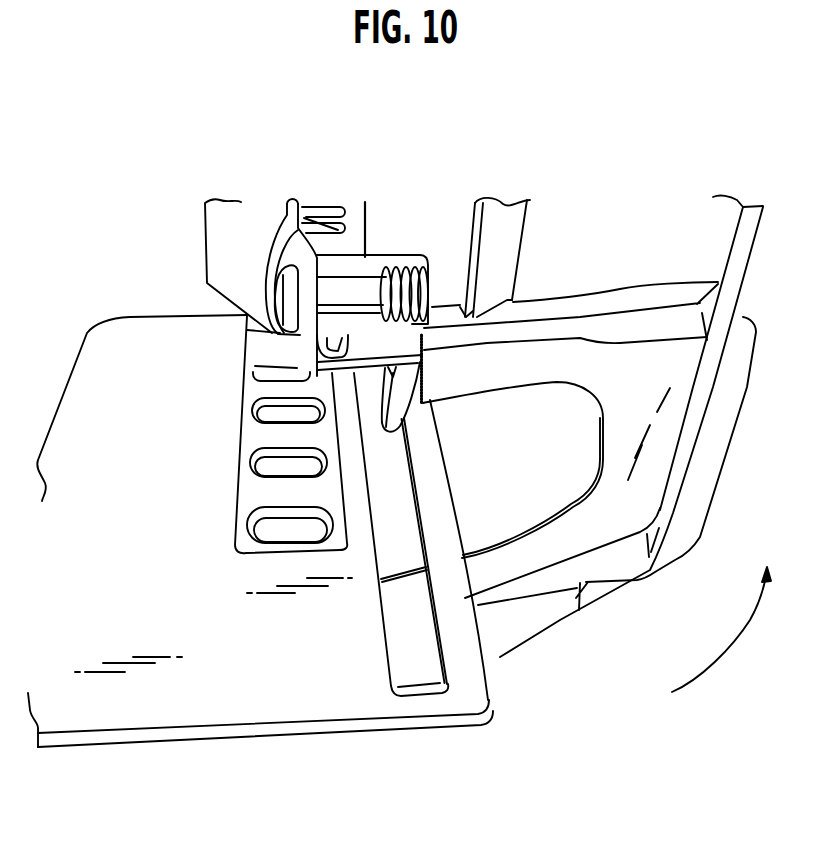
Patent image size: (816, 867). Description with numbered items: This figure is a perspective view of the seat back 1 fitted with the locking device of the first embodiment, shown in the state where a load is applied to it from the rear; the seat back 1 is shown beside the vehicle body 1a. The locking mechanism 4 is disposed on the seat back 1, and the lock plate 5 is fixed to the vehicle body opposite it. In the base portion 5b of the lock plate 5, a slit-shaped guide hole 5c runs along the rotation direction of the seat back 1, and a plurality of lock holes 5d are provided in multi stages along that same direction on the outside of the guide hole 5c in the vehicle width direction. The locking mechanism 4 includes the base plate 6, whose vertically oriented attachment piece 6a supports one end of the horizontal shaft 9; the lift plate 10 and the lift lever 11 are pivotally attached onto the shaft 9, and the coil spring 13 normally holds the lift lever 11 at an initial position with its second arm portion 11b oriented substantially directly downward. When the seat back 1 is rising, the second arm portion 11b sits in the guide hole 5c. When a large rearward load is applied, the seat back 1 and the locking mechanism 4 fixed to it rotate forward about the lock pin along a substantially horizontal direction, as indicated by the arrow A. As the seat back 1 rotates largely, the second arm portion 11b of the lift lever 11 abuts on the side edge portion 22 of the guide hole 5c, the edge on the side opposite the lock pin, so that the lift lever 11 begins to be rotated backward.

The seat back 1 is at (631, 388).
The body panel 1a is at (681, 236).
The locking mechanism 4 is at (198, 232).
The lock plate 5 is at (251, 730).
The base portion 5b is at (313, 677).
The guide hole 5c is at (422, 650).
The lock holes 5d is at (243, 385).
The base plate 6 is at (333, 258).
The attachment piece 6a is at (260, 233).
The shaft 9 is at (362, 295).
The lift plate 10 is at (347, 237).
The lift lever 11 is at (549, 433).
The second arm portion 11b is at (397, 404).
The coil spring 13 is at (428, 303).
The side edge portion 22 is at (455, 622).
The arrow A is at (716, 664).